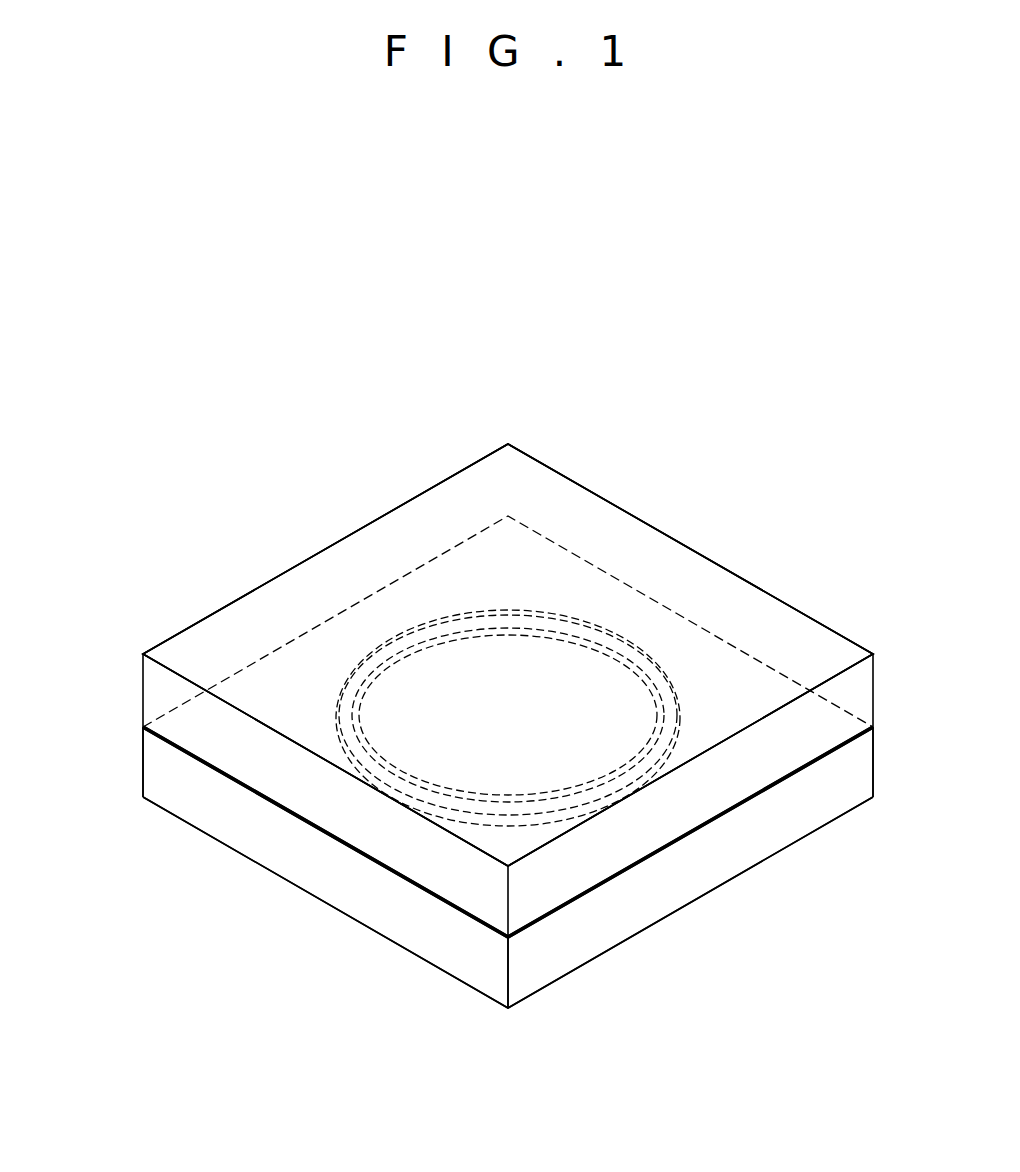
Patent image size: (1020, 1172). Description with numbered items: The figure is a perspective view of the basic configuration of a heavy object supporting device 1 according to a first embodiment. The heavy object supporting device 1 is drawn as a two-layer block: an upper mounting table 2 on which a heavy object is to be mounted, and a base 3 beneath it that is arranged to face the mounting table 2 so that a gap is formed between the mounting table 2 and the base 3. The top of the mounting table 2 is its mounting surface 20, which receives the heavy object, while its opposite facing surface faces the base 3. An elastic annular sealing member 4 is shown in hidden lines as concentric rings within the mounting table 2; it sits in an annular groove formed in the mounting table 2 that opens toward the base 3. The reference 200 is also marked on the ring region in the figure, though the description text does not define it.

The heavy object supporting device 1 is at (589, 415).
The mounting table 2 is at (133, 680).
The base 3 is at (133, 758).
The elastic annular sealing member 4 is at (620, 648).
The mounting surface 20 is at (781, 650).
The outer ring 200 is at (668, 685).